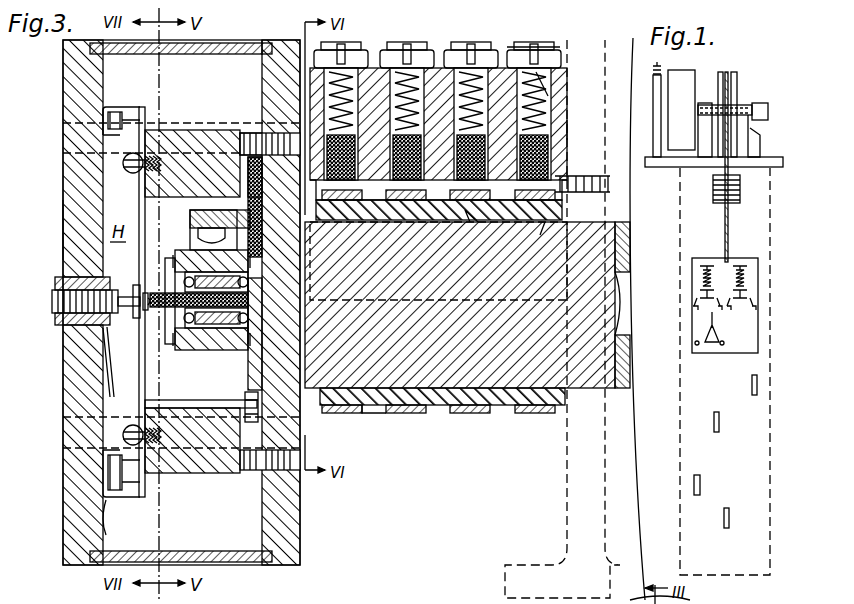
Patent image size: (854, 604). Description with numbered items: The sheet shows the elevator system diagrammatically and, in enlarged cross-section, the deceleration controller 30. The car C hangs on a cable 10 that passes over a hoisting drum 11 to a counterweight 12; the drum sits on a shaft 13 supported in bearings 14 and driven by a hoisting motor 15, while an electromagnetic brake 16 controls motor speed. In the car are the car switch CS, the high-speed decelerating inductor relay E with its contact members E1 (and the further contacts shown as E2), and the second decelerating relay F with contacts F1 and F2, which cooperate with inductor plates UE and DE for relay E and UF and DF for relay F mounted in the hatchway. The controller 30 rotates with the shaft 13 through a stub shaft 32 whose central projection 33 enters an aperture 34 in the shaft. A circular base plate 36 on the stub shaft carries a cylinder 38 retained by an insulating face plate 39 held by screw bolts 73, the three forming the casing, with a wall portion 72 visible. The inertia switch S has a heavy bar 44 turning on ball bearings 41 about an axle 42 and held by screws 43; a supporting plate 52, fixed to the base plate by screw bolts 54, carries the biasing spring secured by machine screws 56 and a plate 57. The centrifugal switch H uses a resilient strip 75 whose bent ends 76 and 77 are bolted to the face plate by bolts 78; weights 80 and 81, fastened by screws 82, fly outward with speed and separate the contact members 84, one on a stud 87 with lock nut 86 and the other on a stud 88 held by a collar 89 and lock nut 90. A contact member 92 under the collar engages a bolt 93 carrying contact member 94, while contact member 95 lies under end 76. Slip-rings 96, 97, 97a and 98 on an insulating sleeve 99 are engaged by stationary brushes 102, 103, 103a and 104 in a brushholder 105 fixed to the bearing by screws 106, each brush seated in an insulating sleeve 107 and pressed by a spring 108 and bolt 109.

In FIG. 1, the cable 10 is at (729, 222).
In FIG. 1, the hoisting drum 11 is at (737, 94).
In FIG. 1, the counterweight 12 is at (740, 187).
In FIG. 3, the shaft 13 is at (632, 228).
In FIG. 1, the shaft 13 is at (703, 108).
In FIG. 3, the bearings 14 is at (578, 480).
In FIG. 1, the hoisting motor 15 is at (685, 72).
In FIG. 1, the electromagnetic brake 16 is at (654, 95).
In FIG. 3, the deceleration controller 30 is at (418, 465).
In FIG. 1, the deceleration controller 30 is at (765, 105).
In FIG. 3, the stub shaft 32 is at (502, 405).
In FIG. 3, the central projection 33 is at (633, 292).
In FIG. 3, the aperture 34 is at (636, 330).
In FIG. 3, the circular base plate 36 is at (262, 95).
In FIG. 3, the cylinder 38 is at (218, 41).
In FIG. 3, the face plate 39 is at (65, 236).
In FIG. 3, the ball bearings 41 is at (170, 345).
In FIG. 3, the stub shaft or axle 42 is at (243, 350).
In FIG. 3, the screws 43 is at (176, 260).
In FIG. 3, the heavy bar 44 is at (196, 350).
In FIG. 3, the supporting plate 52 is at (254, 177).
In FIG. 3, the screw bolts 54 is at (255, 133).
In FIG. 3, the machine screws 56 is at (195, 206).
In FIG. 3, the plate 57 is at (198, 228).
In FIG. 3, the wall 72 is at (272, 42).
In FIG. 3, the screw bolts 73 is at (243, 131).
In FIG. 3, the resilient strip or flat spring 75 is at (140, 370).
In FIG. 3, the outer end of strip 76 is at (118, 498).
In FIG. 3, the outer end of strip 77 is at (122, 103).
In FIG. 3, the bolts 78 is at (166, 491).
In FIG. 3, the weight member 80 is at (203, 475).
In FIG. 3, the weight member 81 is at (166, 135).
In FIG. 3, the screws 82 is at (133, 174).
In FIG. 3, the contact members 84 is at (128, 297).
In FIG. 3, the lock nut 86 is at (145, 290).
In FIG. 3, the screw threaded stud 87 is at (146, 318).
In FIG. 3, the screw threaded stud 88 is at (52, 312).
In FIG. 3, the collar 89 is at (70, 330).
In FIG. 3, the lock nut 90 is at (62, 326).
In FIG. 3, the contact member 92 is at (110, 365).
In FIG. 3, the bolt 93 is at (201, 394).
In FIG. 3, the contact member 94 is at (252, 393).
In FIG. 3, the contact member 95 is at (107, 530).
In FIG. 3, the slip-ring 96 is at (345, 413).
In FIG. 3, the slip-ring 97 is at (420, 413).
In FIG. 3, the slip-ring 97a is at (470, 413).
In FIG. 3, the slip-ring 98 is at (535, 413).
In FIG. 3, the insulating sleeve 99 is at (375, 413).
In FIG. 3, the stationary brush 102 is at (368, 130).
In FIG. 3, the stationary brush 103 is at (400, 222).
In FIG. 3, the stationary brush 103a is at (476, 222).
In FIG. 3, the stationary brush 104 is at (536, 222).
In FIG. 3, the brushholder 105 is at (567, 129).
In FIG. 3, the screws 106 is at (579, 176).
In FIG. 3, the insulating sleeve 107 is at (445, 243).
In FIG. 3, the spring 108 is at (540, 72).
In FIG. 3, the screw threaded bolt 109 is at (520, 47).
In FIG. 1, the centrifugal switch H is at (788, 233).
In FIG. 3, the inertia switch S is at (222, 375).
In FIG. 1, the car C is at (725, 321).
In FIG. 1, the second decelerating inductor relay F is at (707, 280).
In FIG. 1, the high-speed decelerating inductor relay E is at (740, 280).
In FIG. 1, the contact F1 is at (699, 313).
In FIG. 1, the contact F2 is at (721, 315).
In FIG. 1, the contact members E1 is at (736, 315).
In FIG. 1, the contact E2 is at (749, 320).
In FIG. 1, the car switch CS is at (714, 328).
In FIG. 1, the inductor plate DE is at (756, 382).
In FIG. 1, the inductor plate DF is at (720, 422).
In FIG. 1, the inductor plate UF is at (701, 485).
In FIG. 1, the inductor plate UE is at (741, 518).